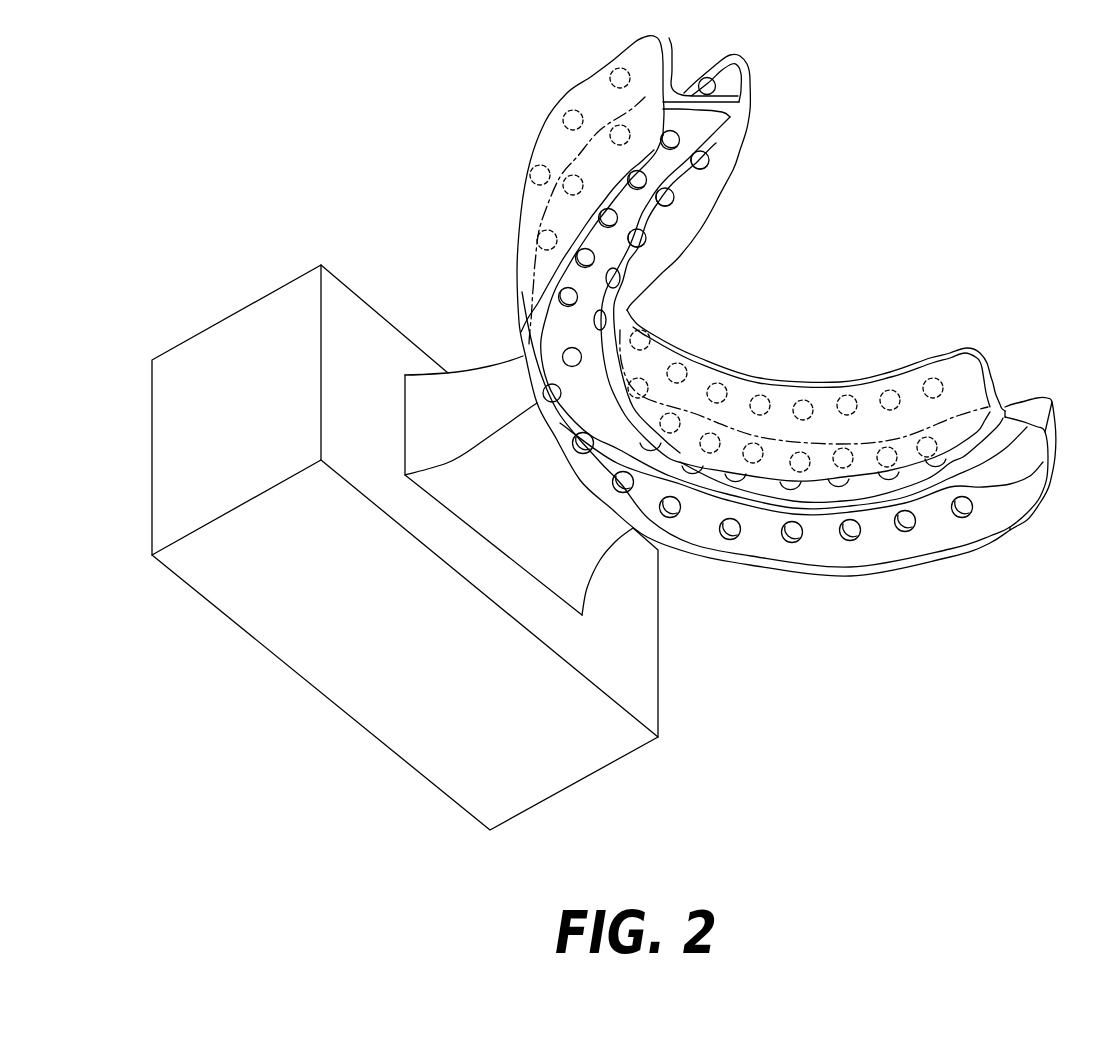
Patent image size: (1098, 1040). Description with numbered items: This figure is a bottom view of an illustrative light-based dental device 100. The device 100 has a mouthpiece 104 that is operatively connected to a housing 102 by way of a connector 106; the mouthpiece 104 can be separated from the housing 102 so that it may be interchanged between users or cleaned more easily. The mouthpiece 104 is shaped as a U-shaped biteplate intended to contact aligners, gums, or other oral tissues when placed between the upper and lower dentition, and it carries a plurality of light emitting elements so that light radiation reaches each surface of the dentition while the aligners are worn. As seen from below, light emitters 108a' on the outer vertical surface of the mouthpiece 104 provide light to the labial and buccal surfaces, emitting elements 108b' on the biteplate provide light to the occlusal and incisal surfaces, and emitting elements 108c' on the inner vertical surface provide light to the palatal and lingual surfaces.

The dental device 100 is at (807, 334).
The housing 102 is at (438, 533).
The mouthpiece 104 is at (876, 558).
The connector 106 is at (577, 552).
The light emitters 108a' is at (796, 516).
The emitting elements 108b' is at (1024, 466).
The emitting elements 108c' is at (707, 228).